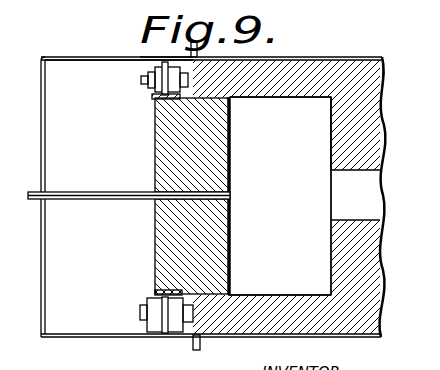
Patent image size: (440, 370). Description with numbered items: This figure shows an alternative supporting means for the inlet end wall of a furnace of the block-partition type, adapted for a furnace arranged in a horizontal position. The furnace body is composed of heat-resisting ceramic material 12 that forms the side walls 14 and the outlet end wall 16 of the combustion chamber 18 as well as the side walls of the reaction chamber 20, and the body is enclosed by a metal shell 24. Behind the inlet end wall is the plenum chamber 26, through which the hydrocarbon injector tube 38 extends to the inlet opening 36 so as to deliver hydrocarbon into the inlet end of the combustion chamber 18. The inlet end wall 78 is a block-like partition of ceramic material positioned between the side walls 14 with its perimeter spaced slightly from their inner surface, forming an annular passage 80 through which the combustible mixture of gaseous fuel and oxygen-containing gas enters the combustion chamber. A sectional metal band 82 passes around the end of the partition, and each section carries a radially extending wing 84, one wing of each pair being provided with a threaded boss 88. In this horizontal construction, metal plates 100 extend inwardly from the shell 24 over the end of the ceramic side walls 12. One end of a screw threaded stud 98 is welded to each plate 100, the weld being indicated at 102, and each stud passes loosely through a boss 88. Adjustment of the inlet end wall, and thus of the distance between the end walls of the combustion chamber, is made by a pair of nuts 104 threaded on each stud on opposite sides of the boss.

The heat-resisting ceramic material 12 is at (357, 70).
The side walls 14 is at (272, 97).
The outlet end wall 16 is at (330, 148).
The combustion chamber 18 is at (251, 176).
The reaction chamber 20 is at (350, 206).
The metal shell 24 is at (300, 58).
The plenum chamber 26 is at (68, 197).
The inlet opening 36 is at (148, 200).
The hydrocarbon injector tube 38 is at (77, 199).
The inlet end wall 78 is at (229, 244).
The annular passage 80 is at (232, 295).
The sectional metal band 82 is at (153, 293).
The wing 84 is at (99, 58).
The boss 88 is at (166, 57).
The screw threaded stud 98 is at (140, 80).
The metal plates 100 is at (212, 80).
The weld 102 is at (191, 145).
The nuts 104 is at (152, 100).